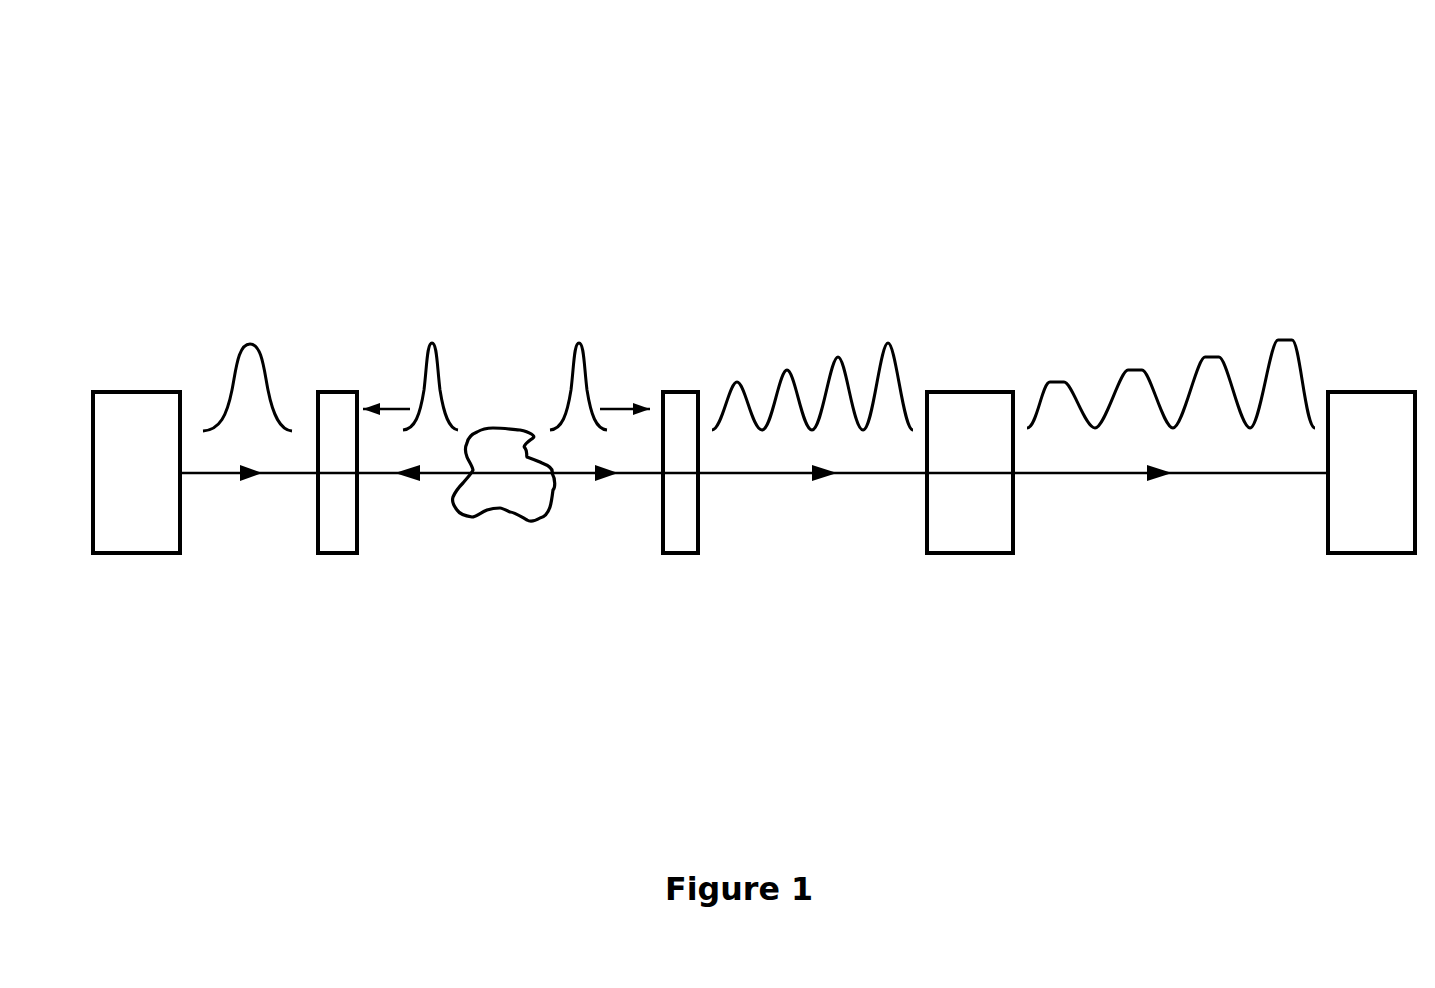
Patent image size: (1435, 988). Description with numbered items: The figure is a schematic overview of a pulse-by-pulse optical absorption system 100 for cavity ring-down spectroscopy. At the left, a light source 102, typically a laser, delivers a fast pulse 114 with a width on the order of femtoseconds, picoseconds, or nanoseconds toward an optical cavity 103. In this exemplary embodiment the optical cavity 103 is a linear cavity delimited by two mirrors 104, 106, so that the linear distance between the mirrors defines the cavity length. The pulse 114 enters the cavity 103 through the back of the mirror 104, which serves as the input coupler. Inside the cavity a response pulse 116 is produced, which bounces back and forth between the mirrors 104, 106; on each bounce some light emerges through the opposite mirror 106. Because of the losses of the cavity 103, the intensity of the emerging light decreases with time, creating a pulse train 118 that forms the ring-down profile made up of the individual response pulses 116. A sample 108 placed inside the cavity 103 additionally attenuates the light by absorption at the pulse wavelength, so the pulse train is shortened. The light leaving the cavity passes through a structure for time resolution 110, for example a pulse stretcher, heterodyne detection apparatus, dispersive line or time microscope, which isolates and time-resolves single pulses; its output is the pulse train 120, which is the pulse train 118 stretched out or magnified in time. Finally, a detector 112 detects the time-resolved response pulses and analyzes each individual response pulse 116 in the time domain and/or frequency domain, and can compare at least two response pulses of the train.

The pulse-by-pulse optical absorption system 100 is at (218, 80).
The light source 102 is at (147, 553).
The optical cavity 103 is at (607, 695).
The mirror 104 is at (340, 553).
The mirror 106 is at (682, 553).
The sample 108 is at (503, 511).
The structure for time resolution 110 is at (968, 553).
The detector 112 is at (1367, 553).
The pulse 114 is at (237, 382).
The response pulse 116 is at (420, 377).
The pulse train 118 is at (827, 378).
The pulse train 120 is at (1197, 378).